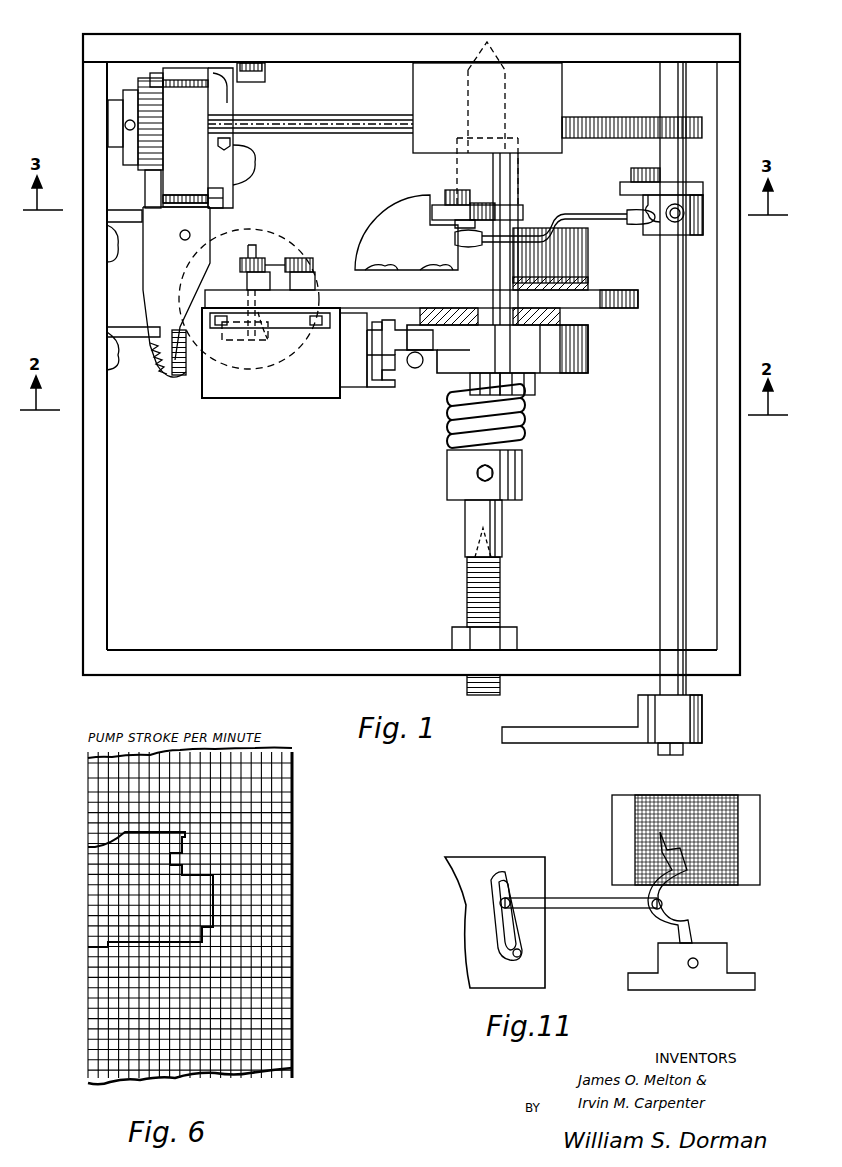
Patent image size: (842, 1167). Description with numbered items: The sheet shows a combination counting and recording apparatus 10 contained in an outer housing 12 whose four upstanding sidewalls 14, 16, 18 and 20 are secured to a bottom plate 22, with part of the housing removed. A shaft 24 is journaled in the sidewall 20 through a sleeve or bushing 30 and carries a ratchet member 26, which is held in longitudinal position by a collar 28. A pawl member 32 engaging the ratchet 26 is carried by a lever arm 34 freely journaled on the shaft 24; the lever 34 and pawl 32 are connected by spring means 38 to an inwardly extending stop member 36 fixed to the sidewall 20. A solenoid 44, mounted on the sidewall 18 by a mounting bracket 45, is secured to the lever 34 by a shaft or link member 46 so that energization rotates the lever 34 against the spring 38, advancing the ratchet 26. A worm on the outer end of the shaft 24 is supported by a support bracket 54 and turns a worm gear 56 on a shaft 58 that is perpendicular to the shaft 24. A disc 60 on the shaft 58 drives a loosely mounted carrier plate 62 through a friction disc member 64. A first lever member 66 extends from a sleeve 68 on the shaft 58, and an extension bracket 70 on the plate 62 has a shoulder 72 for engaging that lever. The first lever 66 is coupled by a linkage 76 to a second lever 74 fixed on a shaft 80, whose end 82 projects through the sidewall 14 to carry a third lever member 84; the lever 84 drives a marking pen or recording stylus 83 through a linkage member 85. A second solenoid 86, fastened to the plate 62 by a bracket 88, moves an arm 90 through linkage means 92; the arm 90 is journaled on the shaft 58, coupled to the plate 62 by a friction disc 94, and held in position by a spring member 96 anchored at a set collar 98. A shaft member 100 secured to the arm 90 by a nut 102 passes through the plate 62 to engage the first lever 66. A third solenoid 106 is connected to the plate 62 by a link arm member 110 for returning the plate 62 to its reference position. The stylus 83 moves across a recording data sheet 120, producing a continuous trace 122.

In FIG. 1, the recorder apparatus 10 is at (562, 348).
In FIG. 1, the outer housing 12 is at (100, 618).
In FIG. 1, the sidewall 14 is at (396, 664).
In FIG. 11, the sidewall 14 is at (540, 977).
In FIG. 1, the sidewall 16 is at (728, 488).
In FIG. 1, the sidewall 18 is at (318, 44).
In FIG. 1, the sidewall 20 is at (96, 462).
In FIG. 1, the bottom plate 22 is at (222, 531).
In FIG. 1, the shaft 24 is at (296, 114).
In FIG. 1, the ratchet member 26 is at (165, 130).
In FIG. 1, the collar 28 is at (140, 93).
In FIG. 1, the sleeve or bushing 30 is at (120, 121).
In FIG. 1, the pawl member 32 is at (162, 190).
In FIG. 1, the lever arm 34 is at (176, 258).
In FIG. 1, the stop member 36 is at (224, 197).
In FIG. 1, the spring means 38 is at (172, 384).
In FIG. 1, the solenoid 44 is at (253, 158).
In FIG. 1, the mounting bracket 45 is at (216, 68).
In FIG. 1, the shaft or link member 46 is at (224, 78).
In FIG. 1, the support bracket 54 is at (538, 70).
In FIG. 1, the worm gear 56 is at (598, 122).
In FIG. 1, the shaft 58 is at (503, 520).
In FIG. 1, the disc 60 is at (591, 262).
In FIG. 1, the carrier plate 62 is at (622, 309).
In FIG. 1, the friction disc member 64 is at (592, 284).
In FIG. 1, the first lever member 66 is at (433, 226).
In FIG. 1, the sleeve 68 is at (503, 183).
In FIG. 1, the extension plate or bracket 70 is at (398, 222).
In FIG. 1, the shoulder 72 is at (441, 205).
In FIG. 1, the second lever 74 is at (624, 184).
In FIG. 1, the linkage 76 is at (571, 213).
In FIG. 1, the shaft 80 is at (668, 540).
In FIG. 1, the end of shaft 82 is at (670, 756).
In FIG. 11, the end of shaft 82 is at (513, 956).
In FIG. 11, the marking pen or recording stylus 83 is at (689, 930).
In FIG. 1, the third lever member 84 is at (576, 728).
In FIG. 11, the third lever member 84 is at (495, 880).
In FIG. 11, the linkage member 85 is at (606, 908).
In FIG. 1, the second solenoid 86 is at (256, 392).
In FIG. 1, the bracket 88 is at (300, 316).
In FIG. 1, the arm 90 is at (461, 356).
In FIG. 1, the linkage means 92 is at (406, 388).
In FIG. 1, the friction disc 94 is at (566, 316).
In FIG. 1, the spring member 96 is at (452, 438).
In FIG. 1, the set collar 98 is at (448, 476).
In FIG. 1, the shaft member 100 is at (521, 228).
In FIG. 1, the nut 102 is at (516, 393).
In FIG. 1, the third solenoid 106 is at (284, 252).
In FIG. 1, the link arm member 110 is at (275, 280).
In FIG. 6, the graph paper or recording data sheet 120 is at (275, 958).
In FIG. 6, the continuous trace 122 is at (90, 848).